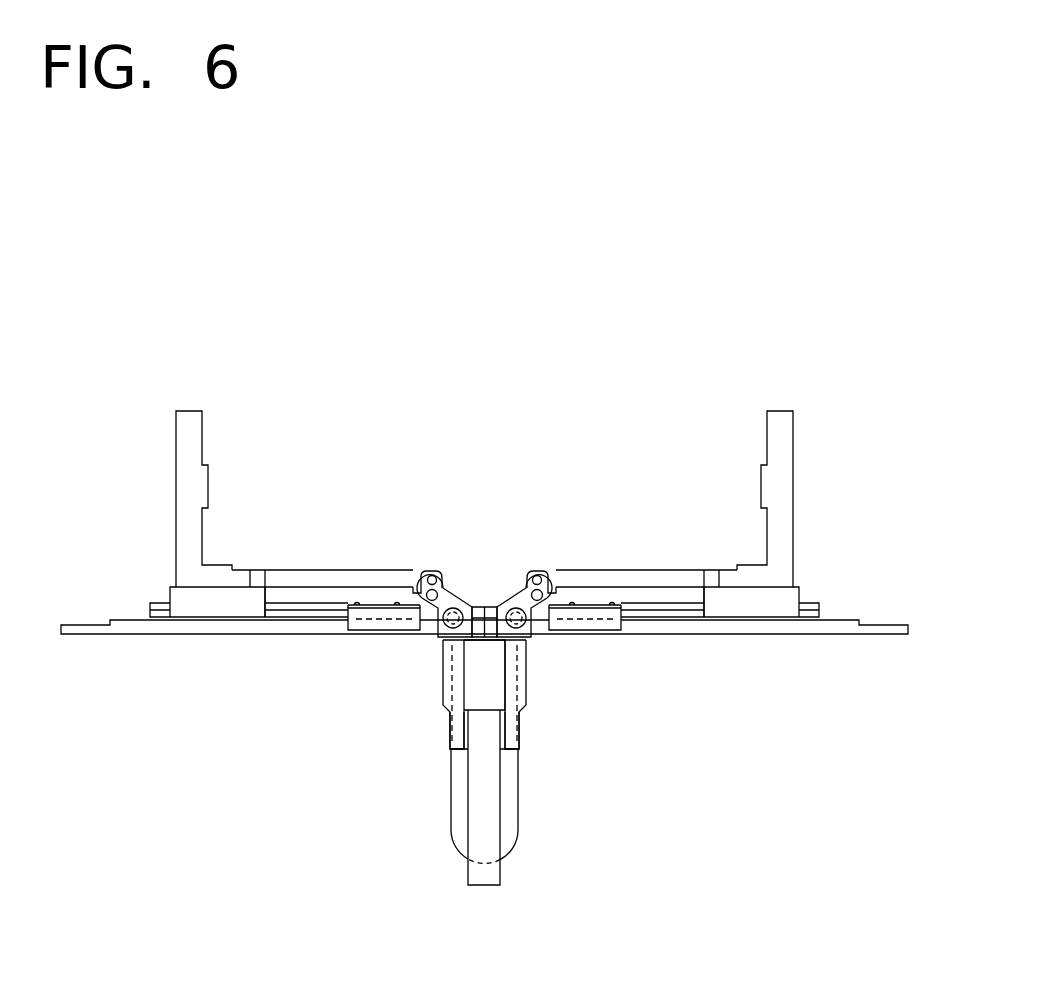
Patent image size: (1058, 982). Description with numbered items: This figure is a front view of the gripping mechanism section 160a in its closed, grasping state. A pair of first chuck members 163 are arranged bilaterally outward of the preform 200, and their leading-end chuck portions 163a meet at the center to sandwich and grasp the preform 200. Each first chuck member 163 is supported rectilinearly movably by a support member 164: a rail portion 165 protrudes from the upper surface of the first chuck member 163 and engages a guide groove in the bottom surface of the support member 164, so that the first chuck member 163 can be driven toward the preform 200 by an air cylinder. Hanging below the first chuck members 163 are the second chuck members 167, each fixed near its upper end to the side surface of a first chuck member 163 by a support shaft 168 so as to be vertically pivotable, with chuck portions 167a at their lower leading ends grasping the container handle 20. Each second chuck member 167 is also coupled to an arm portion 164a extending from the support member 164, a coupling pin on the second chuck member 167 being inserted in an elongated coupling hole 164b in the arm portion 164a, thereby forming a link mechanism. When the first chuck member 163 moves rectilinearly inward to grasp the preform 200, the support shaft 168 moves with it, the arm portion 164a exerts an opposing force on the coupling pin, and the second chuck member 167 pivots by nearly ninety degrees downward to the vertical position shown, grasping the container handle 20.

The gripping mechanism section 160a is at (660, 299).
The first chuck member 163 is at (205, 627).
The support member 164 is at (190, 428).
The arm portion 164a is at (358, 577).
The coupling hole 164b is at (427, 577).
The rail portion 165 is at (302, 607).
The chuck portion 163a is at (473, 600).
The support shaft 168 is at (437, 634).
The second chuck member 167 is at (443, 681).
The chuck portion 167a is at (447, 738).
The preform 200 is at (505, 828).
The container handle 20 is at (486, 874).